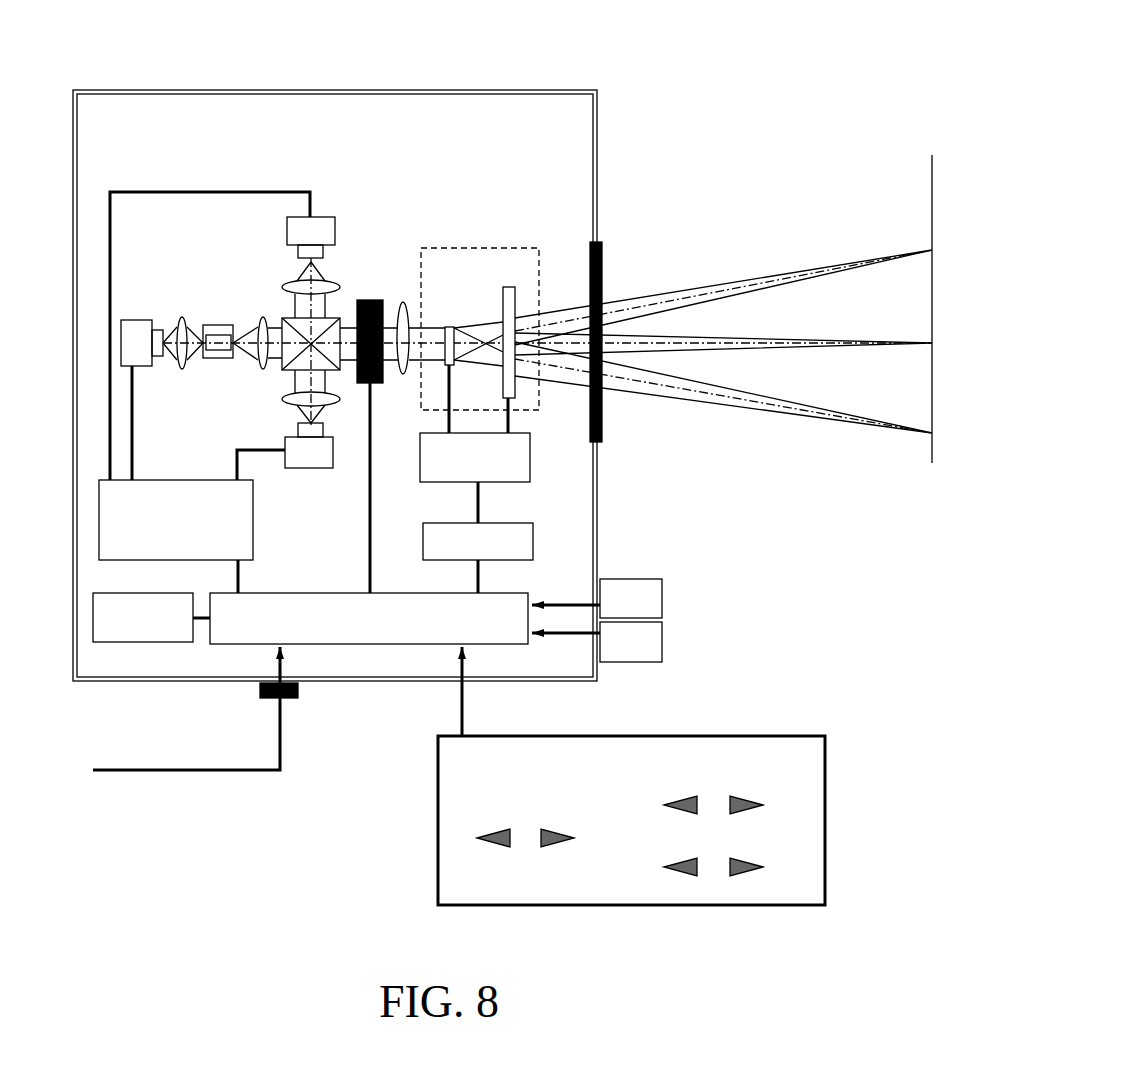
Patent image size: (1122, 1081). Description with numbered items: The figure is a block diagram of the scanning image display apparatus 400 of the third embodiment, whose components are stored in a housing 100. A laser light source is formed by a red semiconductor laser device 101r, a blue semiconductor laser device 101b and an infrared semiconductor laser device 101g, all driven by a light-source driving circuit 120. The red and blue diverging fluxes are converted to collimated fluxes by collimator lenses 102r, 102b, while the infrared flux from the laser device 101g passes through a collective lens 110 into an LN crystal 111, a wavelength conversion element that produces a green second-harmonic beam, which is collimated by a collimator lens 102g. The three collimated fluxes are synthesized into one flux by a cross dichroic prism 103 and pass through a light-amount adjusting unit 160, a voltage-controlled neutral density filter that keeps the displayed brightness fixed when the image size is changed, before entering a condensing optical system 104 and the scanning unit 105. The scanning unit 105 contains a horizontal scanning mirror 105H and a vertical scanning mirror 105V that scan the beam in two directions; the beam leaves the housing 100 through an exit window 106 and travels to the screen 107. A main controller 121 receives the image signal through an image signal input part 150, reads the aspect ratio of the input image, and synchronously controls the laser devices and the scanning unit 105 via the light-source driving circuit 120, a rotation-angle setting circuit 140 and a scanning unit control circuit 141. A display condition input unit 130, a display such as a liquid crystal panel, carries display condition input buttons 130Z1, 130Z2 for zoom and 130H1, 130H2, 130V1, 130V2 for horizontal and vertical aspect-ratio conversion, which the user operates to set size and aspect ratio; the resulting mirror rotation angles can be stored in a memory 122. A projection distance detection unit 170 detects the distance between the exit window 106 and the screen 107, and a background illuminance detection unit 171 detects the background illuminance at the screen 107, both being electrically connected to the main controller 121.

The scanning image display apparatus 400 is at (243, 73).
The housing 100 is at (598, 178).
The infrared semiconductor laser device 101g is at (135, 338).
The red semiconductor laser device 101r is at (322, 215).
The blue semiconductor laser device 101b is at (317, 470).
The collimator lens 102g is at (260, 320).
The collimator lens 102r is at (303, 287).
The collimator lens 102b is at (306, 400).
The cross dichroic prism 103 is at (320, 328).
The condensing optical system 104 is at (402, 310).
The scanning unit 105 is at (478, 243).
The horizontal scanning mirror 105H is at (450, 330).
The vertical scanning mirror 105V is at (509, 300).
The exit window 106 is at (600, 424).
The screen 107 is at (930, 222).
The collective lens 110 is at (184, 326).
The LN crystal 111 is at (215, 346).
The light-source driving circuit 120 is at (176, 536).
The main controller 121 is at (369, 618).
The memory 122 is at (151, 617).
The display condition input unit 130 is at (703, 735).
The display condition input button 130Z1 is at (482, 849).
The display condition input button 130Z2 is at (560, 850).
The display condition input button 130H1 is at (677, 809).
The display condition input button 130H2 is at (757, 809).
The display condition input button 130V1 is at (677, 871).
The display condition input button 130V2 is at (757, 873).
The rotation-angle setting circuit 140 is at (478, 558).
The scanning unit control circuit 141 is at (475, 478).
The image signal input part 150 is at (257, 699).
The light-amount adjusting unit 160 is at (357, 385).
The projection distance detection unit 170 is at (597, 598).
The background illuminance detection unit 171 is at (597, 642).